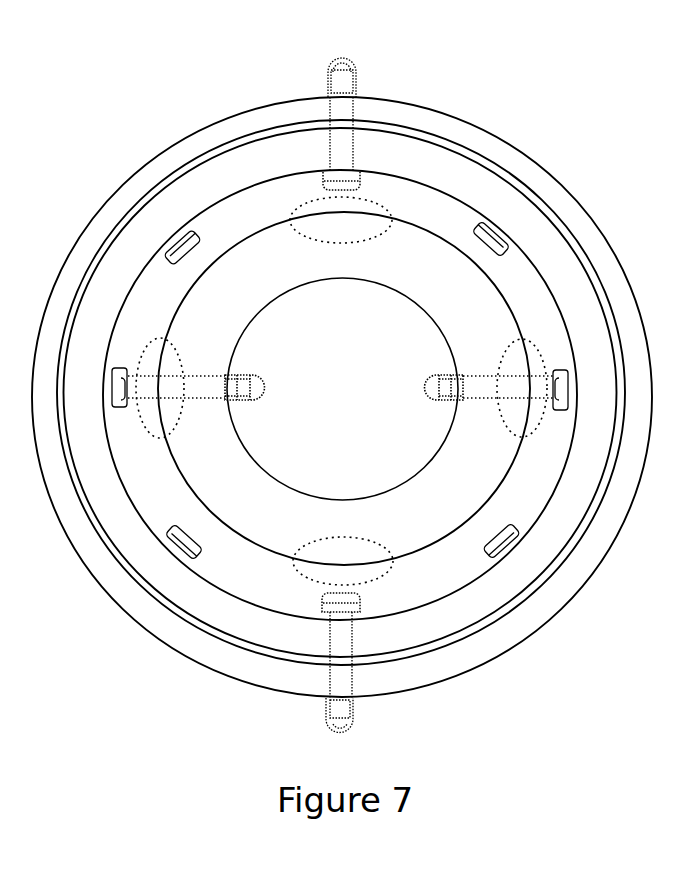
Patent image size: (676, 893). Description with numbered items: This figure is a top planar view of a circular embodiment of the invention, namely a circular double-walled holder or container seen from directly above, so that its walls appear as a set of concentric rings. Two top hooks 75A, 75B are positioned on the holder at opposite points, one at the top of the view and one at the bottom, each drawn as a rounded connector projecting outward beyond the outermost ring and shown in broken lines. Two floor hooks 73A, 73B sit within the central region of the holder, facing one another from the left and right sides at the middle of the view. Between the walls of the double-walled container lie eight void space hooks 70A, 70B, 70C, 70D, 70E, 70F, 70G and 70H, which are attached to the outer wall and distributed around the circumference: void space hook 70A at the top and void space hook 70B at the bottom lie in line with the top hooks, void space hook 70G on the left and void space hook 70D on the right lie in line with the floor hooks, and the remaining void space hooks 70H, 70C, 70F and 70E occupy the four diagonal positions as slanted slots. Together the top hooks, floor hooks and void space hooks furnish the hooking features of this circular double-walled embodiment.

The top hook 75A is at (342, 57).
The top hook 75B is at (342, 734).
The void space hook 70A is at (362, 187).
The void space hook 70B is at (362, 608).
The void space hook 70C is at (477, 237).
The void space hook 70D is at (560, 412).
The void space hook 70E is at (487, 553).
The void space hook 70F is at (199, 546).
The void space hook 70G is at (118, 367).
The void space hook 70H is at (199, 250).
The floor hook 73A is at (265, 400).
The floor hook 73B is at (424, 400).